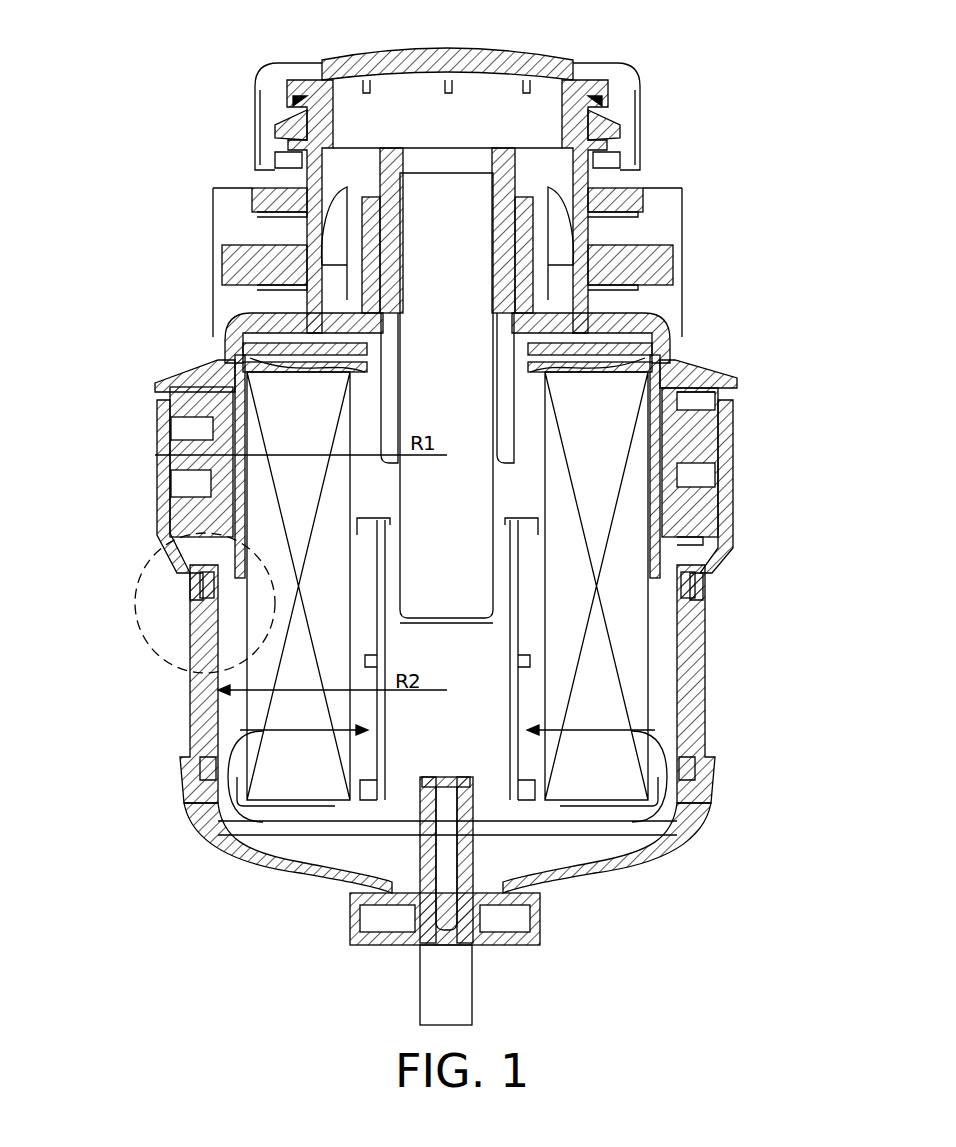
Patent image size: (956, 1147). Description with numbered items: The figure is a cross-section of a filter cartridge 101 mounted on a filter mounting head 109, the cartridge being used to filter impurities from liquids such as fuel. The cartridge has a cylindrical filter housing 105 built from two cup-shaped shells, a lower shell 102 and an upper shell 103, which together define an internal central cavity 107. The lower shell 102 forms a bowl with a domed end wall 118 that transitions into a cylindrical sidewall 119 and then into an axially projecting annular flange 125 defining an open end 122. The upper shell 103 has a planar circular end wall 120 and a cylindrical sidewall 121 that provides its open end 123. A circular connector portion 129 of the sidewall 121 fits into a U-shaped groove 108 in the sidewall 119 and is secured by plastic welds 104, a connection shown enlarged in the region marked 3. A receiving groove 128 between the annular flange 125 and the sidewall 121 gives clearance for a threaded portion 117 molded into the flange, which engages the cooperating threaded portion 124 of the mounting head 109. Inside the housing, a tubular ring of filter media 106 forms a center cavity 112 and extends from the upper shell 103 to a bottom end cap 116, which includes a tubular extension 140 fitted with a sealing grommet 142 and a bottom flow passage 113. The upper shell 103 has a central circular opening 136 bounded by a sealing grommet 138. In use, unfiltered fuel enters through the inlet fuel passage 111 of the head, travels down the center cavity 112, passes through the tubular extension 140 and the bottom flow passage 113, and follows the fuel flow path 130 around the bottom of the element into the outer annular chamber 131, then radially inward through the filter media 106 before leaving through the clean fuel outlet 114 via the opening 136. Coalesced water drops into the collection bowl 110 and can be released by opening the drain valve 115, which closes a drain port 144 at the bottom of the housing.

The filter cartridge 101 is at (118, 876).
The lower shell 102 is at (697, 793).
The upper shell 103 is at (690, 330).
The plastic welds 104 is at (197, 587).
The cylindrical filter housing 105 is at (731, 736).
The filter media 106 is at (244, 710).
The central cavity 107 is at (697, 683).
The U-shaped groove 108 is at (200, 608).
The filter mounting head 109 is at (688, 108).
The collection bowl 110 is at (253, 881).
The inlet fuel passage 111 is at (465, 180).
The center cavity 112 is at (363, 608).
The bottom flow passage 113 is at (603, 827).
The clean fuel outlet 114 is at (392, 352).
The drain valve 115 is at (445, 907).
The bottom end cap 116 is at (627, 820).
The threaded portion 117 is at (712, 425).
The domed end wall 118 is at (575, 870).
The cylindrical sidewall 119 is at (697, 650).
The circular end wall 120 is at (600, 330).
The cylindrical sidewall 121 is at (653, 402).
The open end 122 is at (752, 382).
The open end 123 is at (205, 655).
The threaded portion 124 is at (703, 460).
The annular flange 125 is at (757, 453).
The receiving groove 128 is at (192, 428).
The circular connector portion 129 is at (697, 590).
The fuel flow path 130 is at (318, 731).
The outer annular chamber 131 is at (697, 710).
The central circular opening 136 is at (568, 300).
The circular sealing grommet 138 is at (358, 390).
The tubular extension 140 is at (525, 660).
The circular sealing grommet 142 is at (513, 520).
The drain port 144 is at (540, 907).
The section detail 3 is at (175, 668).